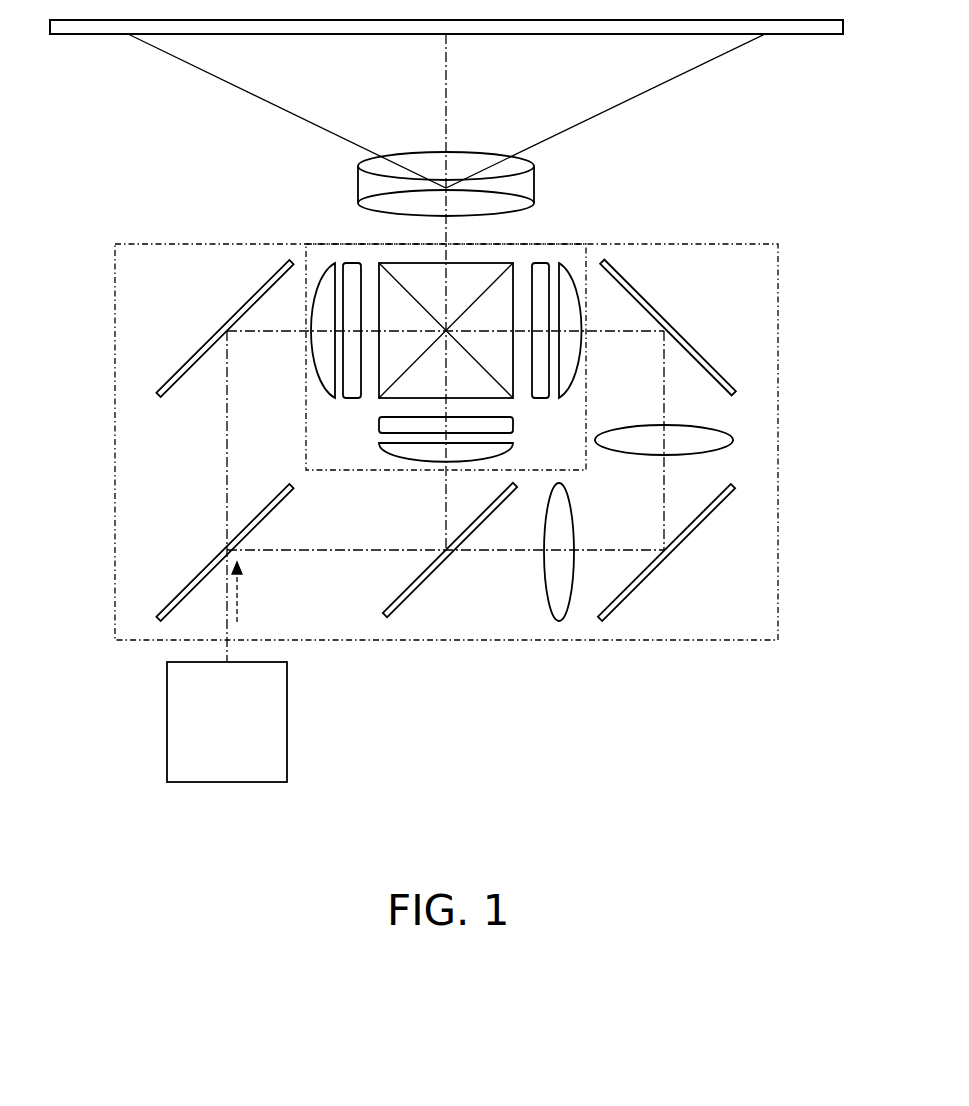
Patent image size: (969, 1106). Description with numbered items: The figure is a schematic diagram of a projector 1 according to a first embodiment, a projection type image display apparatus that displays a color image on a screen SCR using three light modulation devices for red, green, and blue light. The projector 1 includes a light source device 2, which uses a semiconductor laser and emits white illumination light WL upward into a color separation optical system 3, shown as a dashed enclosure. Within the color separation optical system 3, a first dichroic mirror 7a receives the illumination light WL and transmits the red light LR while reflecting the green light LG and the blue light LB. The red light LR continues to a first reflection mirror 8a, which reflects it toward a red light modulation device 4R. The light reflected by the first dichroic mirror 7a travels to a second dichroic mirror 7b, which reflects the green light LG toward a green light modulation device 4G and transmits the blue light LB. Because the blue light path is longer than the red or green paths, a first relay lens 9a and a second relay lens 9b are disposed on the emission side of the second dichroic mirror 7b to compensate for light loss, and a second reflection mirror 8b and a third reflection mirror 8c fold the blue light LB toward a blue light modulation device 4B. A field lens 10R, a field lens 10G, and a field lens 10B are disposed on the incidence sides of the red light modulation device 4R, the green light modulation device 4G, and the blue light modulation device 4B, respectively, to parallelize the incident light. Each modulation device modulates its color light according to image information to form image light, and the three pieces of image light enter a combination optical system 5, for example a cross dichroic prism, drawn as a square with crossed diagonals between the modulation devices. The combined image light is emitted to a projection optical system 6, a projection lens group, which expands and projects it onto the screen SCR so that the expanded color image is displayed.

The projector 1 is at (782, 223).
The light source device 2 is at (288, 718).
The color separation optical system 3 is at (114, 387).
The red light modulation device 4R is at (352, 262).
The green light modulation device 4G is at (385, 425).
The blue light modulation device 4B is at (541, 262).
The combination optical system 5 is at (470, 272).
The projection optical system 6 is at (430, 162).
The first dichroic mirror 7a is at (192, 580).
The second dichroic mirror 7b is at (426, 580).
The first reflection mirror 8a is at (202, 345).
The second reflection mirror 8b is at (692, 538).
The third reflection mirror 8c is at (695, 350).
The first relay lens 9a is at (545, 572).
The second relay lens 9b is at (730, 428).
The field lens 10R is at (322, 262).
The field lens 10G is at (385, 450).
The field lens 10B is at (566, 262).
The screen SCR is at (810, 34).
The white illumination light WL is at (240, 600).
The red light LR is at (226, 463).
The green light LG is at (445, 507).
The blue light LB is at (663, 498).